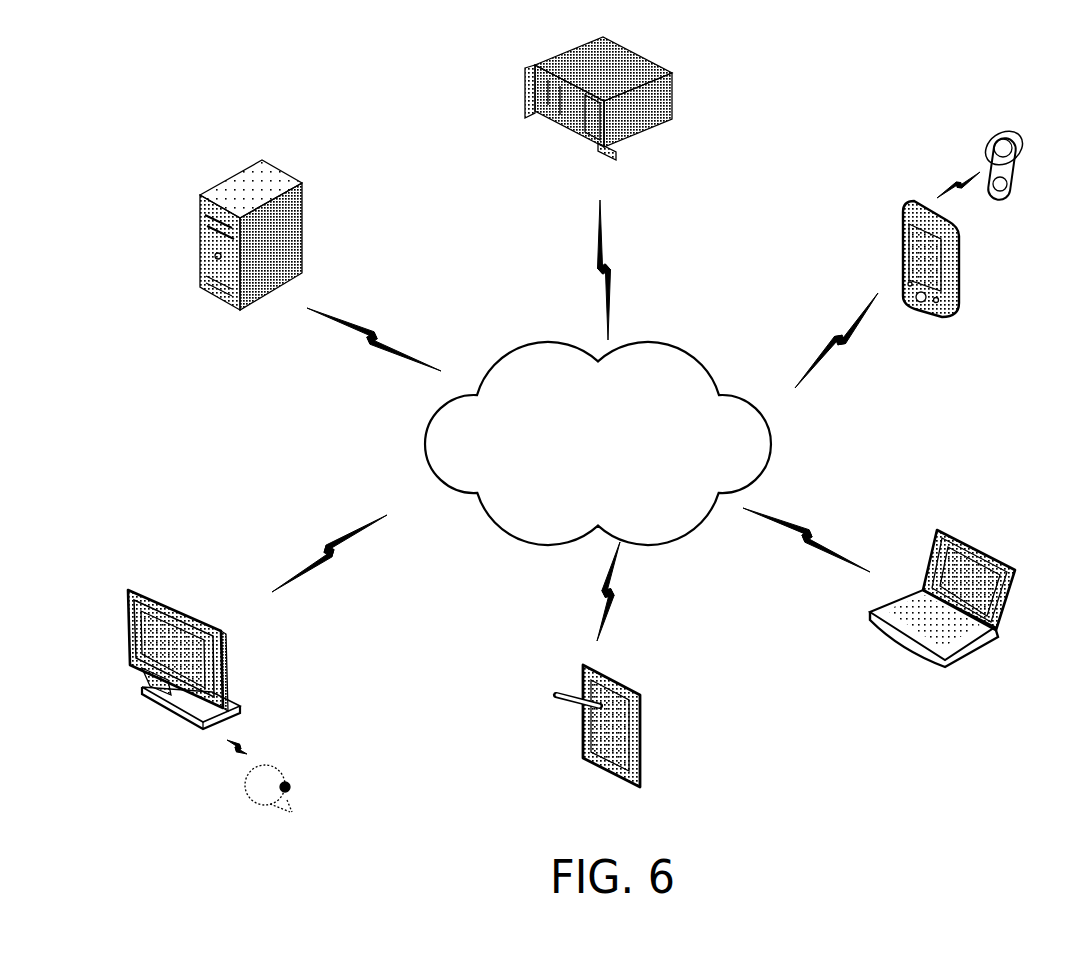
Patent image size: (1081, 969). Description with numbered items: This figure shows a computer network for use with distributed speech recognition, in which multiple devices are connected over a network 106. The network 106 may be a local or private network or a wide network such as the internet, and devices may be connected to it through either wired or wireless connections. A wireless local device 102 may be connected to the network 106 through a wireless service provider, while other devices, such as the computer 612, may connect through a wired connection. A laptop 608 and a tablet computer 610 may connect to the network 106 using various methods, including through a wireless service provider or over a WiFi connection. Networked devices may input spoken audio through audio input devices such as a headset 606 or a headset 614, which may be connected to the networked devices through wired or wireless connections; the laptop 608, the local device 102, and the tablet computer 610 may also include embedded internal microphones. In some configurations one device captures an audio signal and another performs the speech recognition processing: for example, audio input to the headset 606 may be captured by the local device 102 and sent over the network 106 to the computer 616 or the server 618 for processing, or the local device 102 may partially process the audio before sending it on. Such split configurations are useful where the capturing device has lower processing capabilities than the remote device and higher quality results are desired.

The network 106 is at (650, 343).
The server 618 is at (672, 73).
The computer 616 is at (290, 177).
The local device 102 is at (959, 246).
The headset 606 is at (1008, 128).
The laptop 608 is at (951, 535).
The computer 612 is at (182, 600).
The headset 614 is at (283, 760).
The tablet computer 610 is at (634, 689).